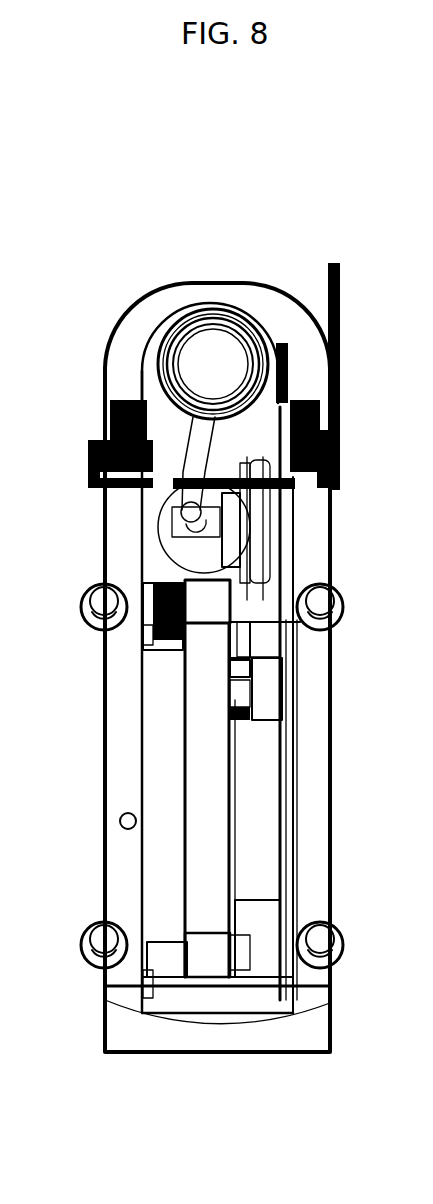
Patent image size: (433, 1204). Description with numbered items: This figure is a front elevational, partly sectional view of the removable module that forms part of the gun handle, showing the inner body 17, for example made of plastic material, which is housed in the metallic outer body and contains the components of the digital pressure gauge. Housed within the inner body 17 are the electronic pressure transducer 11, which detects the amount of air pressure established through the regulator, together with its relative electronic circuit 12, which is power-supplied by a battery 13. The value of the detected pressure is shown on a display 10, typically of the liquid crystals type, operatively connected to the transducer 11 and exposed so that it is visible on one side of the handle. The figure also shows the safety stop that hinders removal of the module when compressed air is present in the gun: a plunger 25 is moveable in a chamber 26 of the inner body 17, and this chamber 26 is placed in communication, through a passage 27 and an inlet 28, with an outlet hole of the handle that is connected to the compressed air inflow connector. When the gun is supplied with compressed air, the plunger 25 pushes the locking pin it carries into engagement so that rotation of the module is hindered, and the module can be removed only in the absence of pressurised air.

The inner body 17 is at (102, 225).
The plunger 25 is at (213, 350).
The chamber 26 is at (160, 392).
The passage 27 is at (198, 448).
The inlet 28 is at (193, 518).
The transducer 11 is at (257, 528).
The electronic circuit 12 is at (208, 760).
The battery 13 is at (260, 850).
The display 10 is at (160, 868).